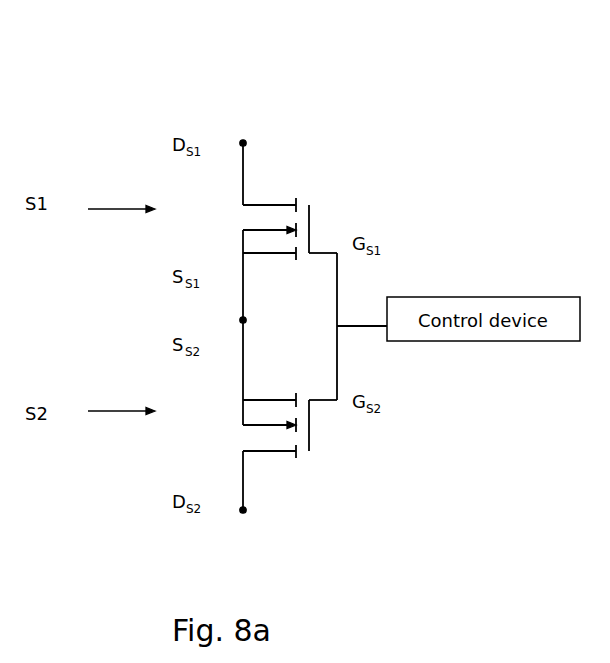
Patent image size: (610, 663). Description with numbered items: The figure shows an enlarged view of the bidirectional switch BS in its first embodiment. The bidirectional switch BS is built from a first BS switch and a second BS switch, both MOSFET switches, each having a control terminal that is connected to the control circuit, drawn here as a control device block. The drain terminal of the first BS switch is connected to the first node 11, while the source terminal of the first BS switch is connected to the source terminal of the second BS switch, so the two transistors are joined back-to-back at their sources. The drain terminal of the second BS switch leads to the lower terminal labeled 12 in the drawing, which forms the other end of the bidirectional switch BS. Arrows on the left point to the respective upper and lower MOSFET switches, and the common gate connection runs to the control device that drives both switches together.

The first node 11 is at (263, 158).
The second drain terminal D_S2 12 is at (251, 502).
The bidirectional switch BS is at (152, 93).